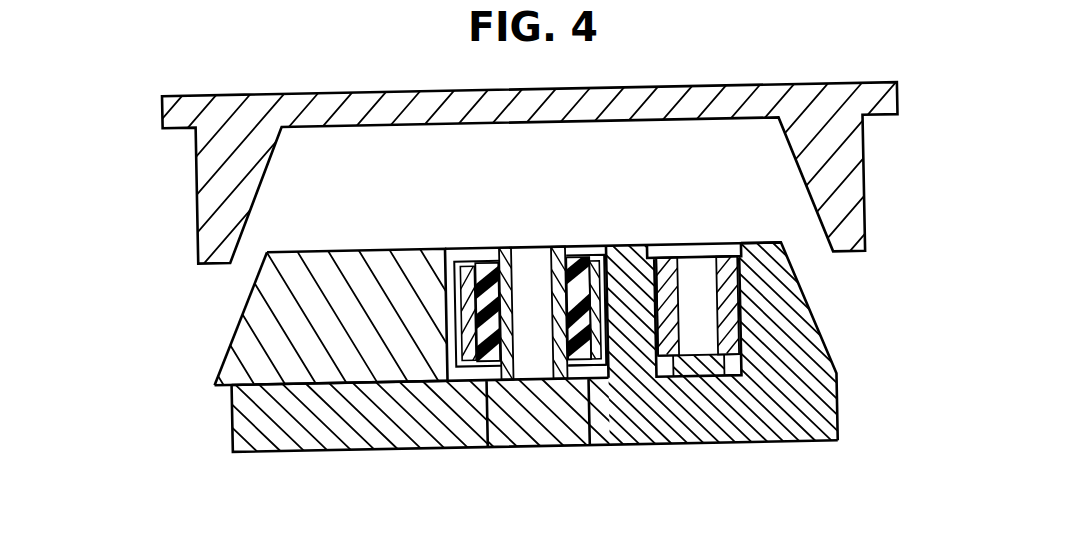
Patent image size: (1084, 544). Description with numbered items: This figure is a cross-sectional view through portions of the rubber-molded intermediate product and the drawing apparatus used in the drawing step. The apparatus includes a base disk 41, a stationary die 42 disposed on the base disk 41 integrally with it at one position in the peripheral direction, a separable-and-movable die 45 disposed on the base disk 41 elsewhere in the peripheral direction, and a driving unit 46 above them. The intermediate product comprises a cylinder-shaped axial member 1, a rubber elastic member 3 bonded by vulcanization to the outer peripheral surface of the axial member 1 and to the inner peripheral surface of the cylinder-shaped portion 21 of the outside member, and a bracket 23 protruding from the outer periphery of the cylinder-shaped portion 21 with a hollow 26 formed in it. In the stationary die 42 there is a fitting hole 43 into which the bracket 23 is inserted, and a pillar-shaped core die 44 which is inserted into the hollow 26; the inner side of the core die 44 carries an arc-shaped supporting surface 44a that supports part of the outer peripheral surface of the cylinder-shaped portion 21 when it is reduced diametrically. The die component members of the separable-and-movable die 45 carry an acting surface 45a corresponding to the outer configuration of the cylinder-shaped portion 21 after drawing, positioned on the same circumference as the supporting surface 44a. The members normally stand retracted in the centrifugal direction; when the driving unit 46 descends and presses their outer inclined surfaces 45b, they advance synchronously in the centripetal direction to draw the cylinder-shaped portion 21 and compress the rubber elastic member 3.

The axial member 1 is at (499, 249).
The rubber elastic member 3 is at (576, 275).
The cylinder-shaped portion 21 is at (600, 340).
The bracket 23 is at (701, 249).
The hollow 26 is at (656, 334).
The base disk 41 is at (428, 426).
The stationary die 42 is at (778, 313).
The fitting hole 43 is at (732, 252).
The core die 44 is at (633, 248).
The supporting surface 44a is at (592, 263).
The separable-and-movable die 45 is at (331, 274).
The acting surface 45a is at (453, 260).
The outer inclined surface 45b is at (244, 303).
The driving unit 46 is at (753, 83).